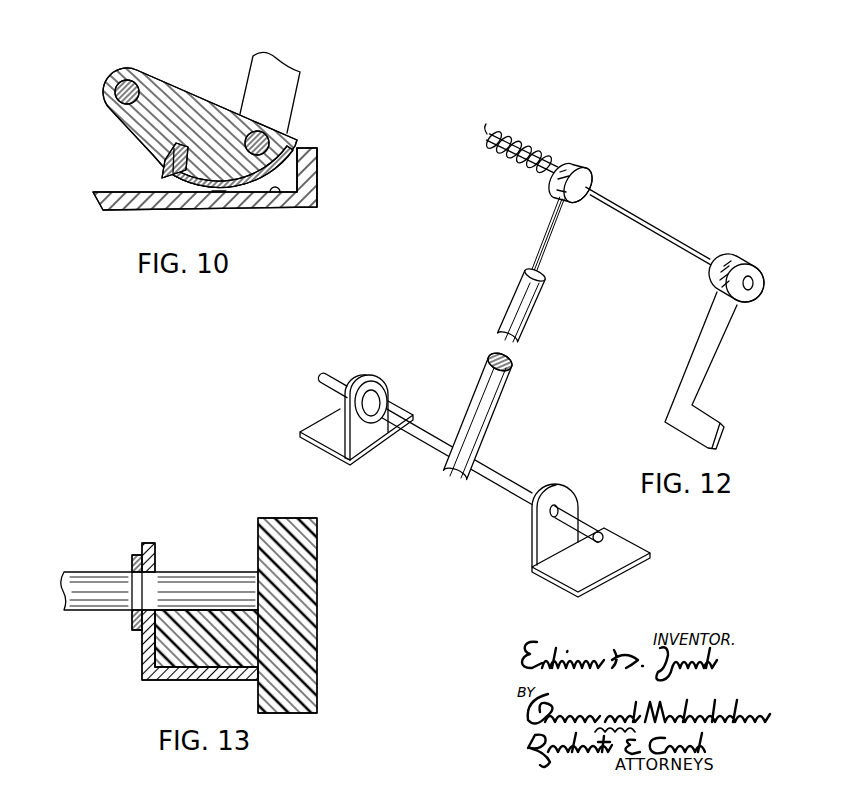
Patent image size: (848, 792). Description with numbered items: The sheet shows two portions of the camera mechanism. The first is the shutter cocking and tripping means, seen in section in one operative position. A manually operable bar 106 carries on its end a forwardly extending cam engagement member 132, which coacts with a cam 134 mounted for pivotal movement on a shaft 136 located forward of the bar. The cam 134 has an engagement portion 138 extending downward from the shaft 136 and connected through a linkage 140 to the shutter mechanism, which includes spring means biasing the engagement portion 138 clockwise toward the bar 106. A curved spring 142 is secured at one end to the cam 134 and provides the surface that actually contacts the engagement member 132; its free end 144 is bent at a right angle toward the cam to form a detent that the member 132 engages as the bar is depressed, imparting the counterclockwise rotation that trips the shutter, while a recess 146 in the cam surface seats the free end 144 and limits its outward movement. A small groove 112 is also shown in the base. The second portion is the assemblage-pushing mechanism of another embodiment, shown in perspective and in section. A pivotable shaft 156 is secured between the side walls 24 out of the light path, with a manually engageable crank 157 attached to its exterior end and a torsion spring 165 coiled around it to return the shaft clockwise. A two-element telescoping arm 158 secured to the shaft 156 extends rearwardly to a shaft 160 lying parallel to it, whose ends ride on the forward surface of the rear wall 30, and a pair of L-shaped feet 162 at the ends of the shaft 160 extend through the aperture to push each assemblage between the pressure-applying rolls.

In FIG. 10, the bar 106 is at (121, 213).
In FIG. 10, the groove 112 is at (272, 192).
In FIG. 10, the cam engagement member 132 is at (315, 170).
In FIG. 10, the cam 134 is at (173, 83).
In FIG. 10, the shaft 136 is at (113, 84).
In FIG. 10, the engagement portion 138 is at (224, 113).
In FIG. 10, the linkage 140 is at (297, 72).
In FIG. 10, the curved spring 142 is at (219, 191).
In FIG. 10, the free end 144 is at (163, 152).
In FIG. 10, the recess 146 is at (177, 178).
In FIG. 12, the pivotable shaft 156 is at (665, 233).
In FIG. 12, the manually engageable crank 157 is at (695, 375).
In FIG. 12, the two-element telescoping arm 158 is at (502, 383).
In FIG. 12, the shaft 160 is at (502, 478).
In FIG. 13, the shaft 160 is at (90, 577).
In FIG. 12, the L-shaped feet 162 is at (323, 425).
In FIG. 13, the L-shaped feet 162 is at (145, 647).
In FIG. 12, the torsion spring 165 is at (520, 137).
In FIG. 13, the side walls 24 is at (310, 592).
In FIG. 13, the rear wall 30 is at (183, 655).